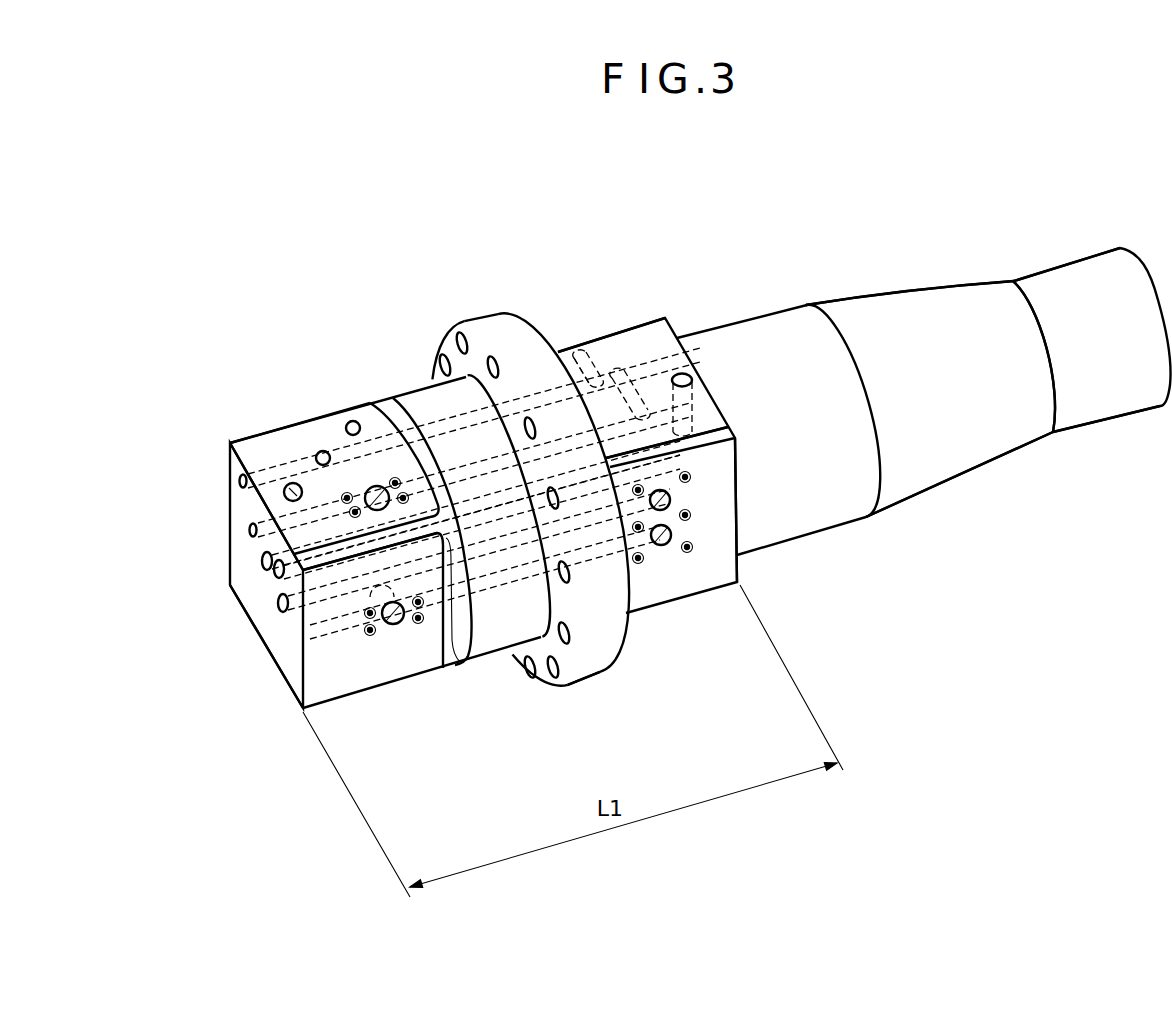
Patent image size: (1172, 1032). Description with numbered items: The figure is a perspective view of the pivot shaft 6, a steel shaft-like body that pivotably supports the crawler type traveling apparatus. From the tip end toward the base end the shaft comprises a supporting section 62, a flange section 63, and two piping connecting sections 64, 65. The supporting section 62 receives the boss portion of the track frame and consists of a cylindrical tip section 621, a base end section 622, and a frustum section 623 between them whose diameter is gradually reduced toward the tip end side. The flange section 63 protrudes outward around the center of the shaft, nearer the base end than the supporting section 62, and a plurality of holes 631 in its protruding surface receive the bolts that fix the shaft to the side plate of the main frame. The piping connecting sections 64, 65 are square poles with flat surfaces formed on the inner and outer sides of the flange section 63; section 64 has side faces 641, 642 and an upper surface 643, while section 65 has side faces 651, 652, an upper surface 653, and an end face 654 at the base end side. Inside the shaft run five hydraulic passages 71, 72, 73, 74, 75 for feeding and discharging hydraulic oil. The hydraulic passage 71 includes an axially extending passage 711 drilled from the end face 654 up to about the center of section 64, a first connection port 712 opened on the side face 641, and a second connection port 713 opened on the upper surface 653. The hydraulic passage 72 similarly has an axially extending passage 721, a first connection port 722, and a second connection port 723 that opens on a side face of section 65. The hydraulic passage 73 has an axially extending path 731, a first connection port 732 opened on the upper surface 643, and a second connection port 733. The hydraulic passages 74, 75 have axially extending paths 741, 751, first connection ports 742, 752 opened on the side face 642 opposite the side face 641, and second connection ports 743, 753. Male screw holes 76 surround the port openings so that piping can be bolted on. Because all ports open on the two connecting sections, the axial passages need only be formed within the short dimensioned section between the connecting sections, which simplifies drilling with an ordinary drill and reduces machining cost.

The pivot shaft 6 is at (925, 305).
The supporting section 62 is at (915, 490).
The tip section of the supporting section 621 is at (1100, 400).
The base end section of the supporting section 622 is at (845, 498).
The frustum section 623 is at (975, 450).
The flange section 63 is at (585, 672).
The holes 631 is at (575, 640).
The piping connecting section 64 is at (724, 565).
The side face 641 is at (741, 582).
The side face 642 is at (640, 365).
The upper surface 643 is at (705, 405).
The piping connecting section 65 is at (322, 688).
The side face 651 is at (348, 682).
The side face 652 is at (238, 445).
The upper surface 653 is at (260, 445).
The end face 654 is at (290, 653).
The hydraulic passage 71 is at (275, 572).
The axially extending passage 711 is at (488, 640).
The first connection port 712 is at (665, 512).
The second connection port 713 is at (377, 486).
The hydraulic passage 72 is at (478, 600).
The axially extending passage 721 is at (281, 603).
The first connection port 722 is at (661, 547).
The second connection port 723 is at (393, 626).
The hydraulic passage 73 is at (262, 560).
The axially extending path 731 is at (514, 600).
The first connection port 732 is at (690, 376).
The second connection port 733 is at (290, 483).
The hydraulic passage 74 is at (510, 470).
The axially extending path 741 is at (250, 528).
The first connection port 742 is at (600, 365).
The second connection port 743 is at (316, 455).
The hydraulic passage 75 is at (468, 410).
The axially extending path 751 is at (240, 480).
The first connection port 752 is at (565, 348).
The second connection port 753 is at (352, 421).
The male screw holes 76 is at (355, 506).